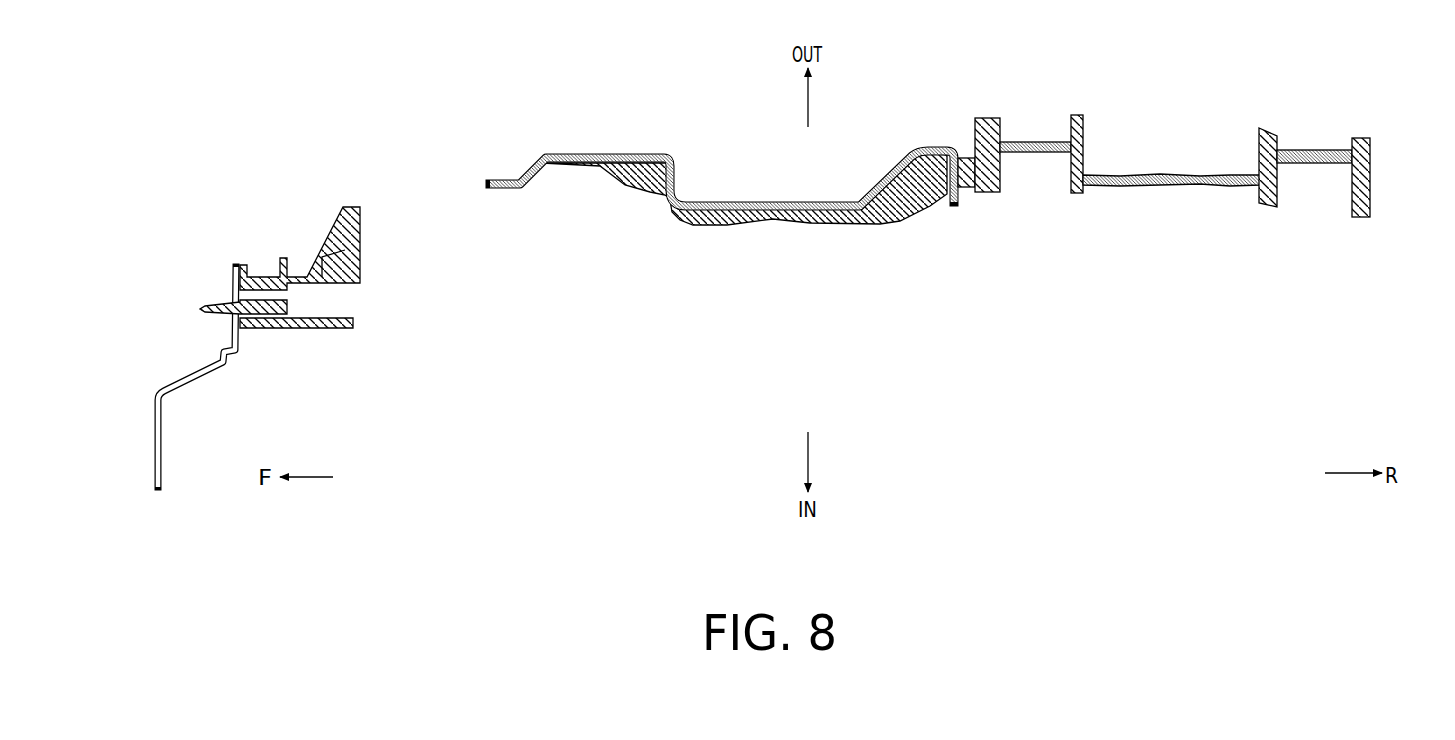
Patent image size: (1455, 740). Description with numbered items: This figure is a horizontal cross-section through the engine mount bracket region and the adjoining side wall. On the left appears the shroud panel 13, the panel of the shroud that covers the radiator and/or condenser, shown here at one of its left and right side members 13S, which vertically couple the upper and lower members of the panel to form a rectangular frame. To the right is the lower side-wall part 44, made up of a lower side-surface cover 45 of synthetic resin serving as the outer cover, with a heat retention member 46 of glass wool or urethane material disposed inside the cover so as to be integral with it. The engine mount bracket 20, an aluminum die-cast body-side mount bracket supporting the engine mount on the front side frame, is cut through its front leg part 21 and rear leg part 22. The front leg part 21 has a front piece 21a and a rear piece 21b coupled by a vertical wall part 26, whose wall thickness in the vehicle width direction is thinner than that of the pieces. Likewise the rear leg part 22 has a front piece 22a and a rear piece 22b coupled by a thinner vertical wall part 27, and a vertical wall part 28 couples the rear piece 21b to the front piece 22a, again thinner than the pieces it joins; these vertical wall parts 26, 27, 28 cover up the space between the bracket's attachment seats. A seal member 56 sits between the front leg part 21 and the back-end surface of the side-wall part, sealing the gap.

The shroud panel 13 is at (228, 345).
The side member 13S is at (268, 277).
The engine mount bracket 20 is at (1175, 173).
The front leg part 21 is at (1001, 140).
The front piece 21a is at (988, 118).
The rear piece 21b is at (1077, 115).
The rear leg part 22 is at (1308, 199).
The front piece 22a is at (1255, 140).
The rear piece 22b is at (1360, 218).
The vertical wall part 26 is at (1040, 153).
The vertical wall part 27 is at (1313, 165).
The vertical wall part 28 is at (1169, 186).
The lower side-wall part 44 is at (607, 153).
The lower side-surface cover 45 is at (722, 145).
The heat retention member 46 is at (648, 184).
The seal member 56 is at (968, 189).